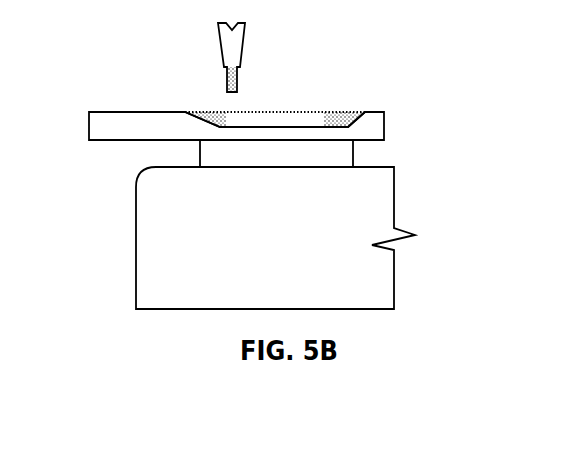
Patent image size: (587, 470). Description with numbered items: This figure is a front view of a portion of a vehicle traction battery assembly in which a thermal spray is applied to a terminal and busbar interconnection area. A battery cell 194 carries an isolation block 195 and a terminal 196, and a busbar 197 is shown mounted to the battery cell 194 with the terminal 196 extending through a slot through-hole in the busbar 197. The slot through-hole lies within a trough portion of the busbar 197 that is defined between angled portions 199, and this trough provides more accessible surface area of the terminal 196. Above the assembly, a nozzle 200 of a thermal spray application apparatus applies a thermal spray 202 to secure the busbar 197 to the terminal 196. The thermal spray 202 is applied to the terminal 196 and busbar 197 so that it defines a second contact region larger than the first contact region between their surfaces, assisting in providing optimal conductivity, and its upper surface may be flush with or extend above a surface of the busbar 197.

The battery cell 194 is at (128, 233).
The isolation block 195 is at (355, 150).
The terminal 196 is at (310, 110).
The busbar 197 is at (81, 127).
The angled portions 199 is at (198, 112).
The nozzle 200 is at (243, 48).
The thermal spray 202 is at (237, 82).